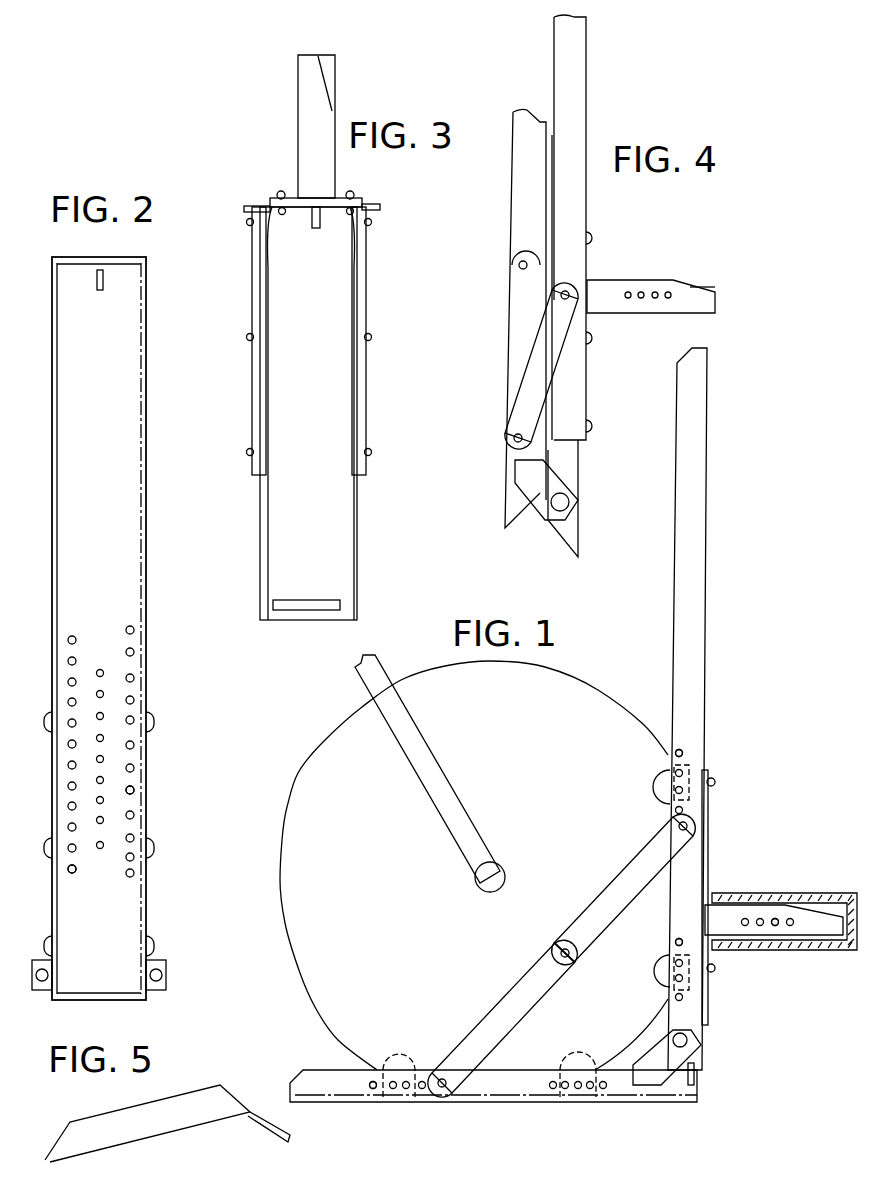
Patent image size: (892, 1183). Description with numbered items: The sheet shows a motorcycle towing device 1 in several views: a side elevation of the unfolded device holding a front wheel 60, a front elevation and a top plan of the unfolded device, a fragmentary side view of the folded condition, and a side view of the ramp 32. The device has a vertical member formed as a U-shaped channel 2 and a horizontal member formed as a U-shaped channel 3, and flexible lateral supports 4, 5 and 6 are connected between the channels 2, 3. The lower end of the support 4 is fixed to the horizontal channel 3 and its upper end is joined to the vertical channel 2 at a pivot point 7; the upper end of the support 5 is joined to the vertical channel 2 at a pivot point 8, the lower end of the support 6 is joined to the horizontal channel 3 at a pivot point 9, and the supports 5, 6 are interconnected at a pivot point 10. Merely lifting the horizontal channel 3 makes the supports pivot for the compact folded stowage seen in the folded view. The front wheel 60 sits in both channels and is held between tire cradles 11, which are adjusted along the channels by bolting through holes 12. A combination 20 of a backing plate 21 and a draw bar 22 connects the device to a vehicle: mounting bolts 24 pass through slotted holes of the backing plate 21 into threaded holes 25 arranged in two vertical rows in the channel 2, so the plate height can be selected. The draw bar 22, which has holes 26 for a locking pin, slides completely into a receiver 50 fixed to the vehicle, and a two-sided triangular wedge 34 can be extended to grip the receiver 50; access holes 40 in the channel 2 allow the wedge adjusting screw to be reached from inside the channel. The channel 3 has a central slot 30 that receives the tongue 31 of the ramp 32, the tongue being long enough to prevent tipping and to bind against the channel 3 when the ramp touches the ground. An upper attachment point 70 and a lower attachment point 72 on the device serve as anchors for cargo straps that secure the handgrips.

In FIG. 1, the motorcycle towing device 1 is at (745, 595).
In FIG. 2, the vertical member or U-shaped channel 2 is at (140, 587).
In FIG. 1, the vertical member or U-shaped channel 2 is at (697, 488).
In FIG. 3, the horizontal member or U-shaped channel 3 is at (347, 554).
In FIG. 1, the horizontal member or U-shaped channel 3 is at (332, 1074).
In FIG. 4, the lateral support 4 is at (556, 486).
In FIG. 1, the lateral support 4 is at (660, 1062).
In FIG. 4, the lateral support 5 is at (537, 393).
In FIG. 1, the lateral support 5 is at (610, 904).
In FIG. 4, the lateral support 6 is at (519, 313).
In FIG. 1, the lateral support 6 is at (498, 1012).
In FIG. 4, the pivot point 7 is at (566, 507).
In FIG. 1, the pivot point 7 is at (688, 1040).
In FIG. 4, the pivot point 8 is at (570, 294).
In FIG. 1, the pivot point 8 is at (676, 822).
In FIG. 4, the pivot point 9 is at (518, 258).
In FIG. 1, the pivot point 9 is at (442, 1080).
In FIG. 4, the pivot point 10 is at (514, 440).
In FIG. 1, the pivot point 10 is at (561, 948).
In FIG. 1, the tire cradles or guides 11 is at (398, 1062).
In FIG. 1, the holes 12 is at (373, 1088).
In FIG. 1, the combination of backing plate and draw bar 20 is at (752, 853).
In FIG. 3, the backing plate 21 is at (292, 198).
In FIG. 4, the backing plate 21 is at (586, 376).
In FIG. 1, the backing plate 21 is at (712, 804).
In FIG. 3, the draw bar 22 is at (305, 128).
In FIG. 4, the draw bar 22 is at (637, 286).
In FIG. 1, the draw bar 22 is at (756, 942).
In FIG. 1, the mounting bolts 24 is at (712, 764).
In FIG. 2, the threaded holes 25 is at (129, 792).
In FIG. 1, the holes 26 is at (781, 928).
In FIG. 3, the slot 30 is at (306, 610).
In FIG. 5, the tongue 31 is at (264, 1124).
In FIG. 1, the ramp 32 is at (444, 790).
In FIG. 5, the ramp 32 is at (198, 1092).
In FIG. 4, the two-sided triangular wedge 34 is at (700, 282).
In FIG. 2, the access holes 40 is at (102, 672).
In FIG. 1, the receiver 50 is at (786, 894).
In FIG. 1, the front wheel 60 is at (564, 678).
In FIG. 2, the upper attachment point 70 is at (104, 290).
In FIG. 1, the lower attachment point 72 is at (696, 1074).